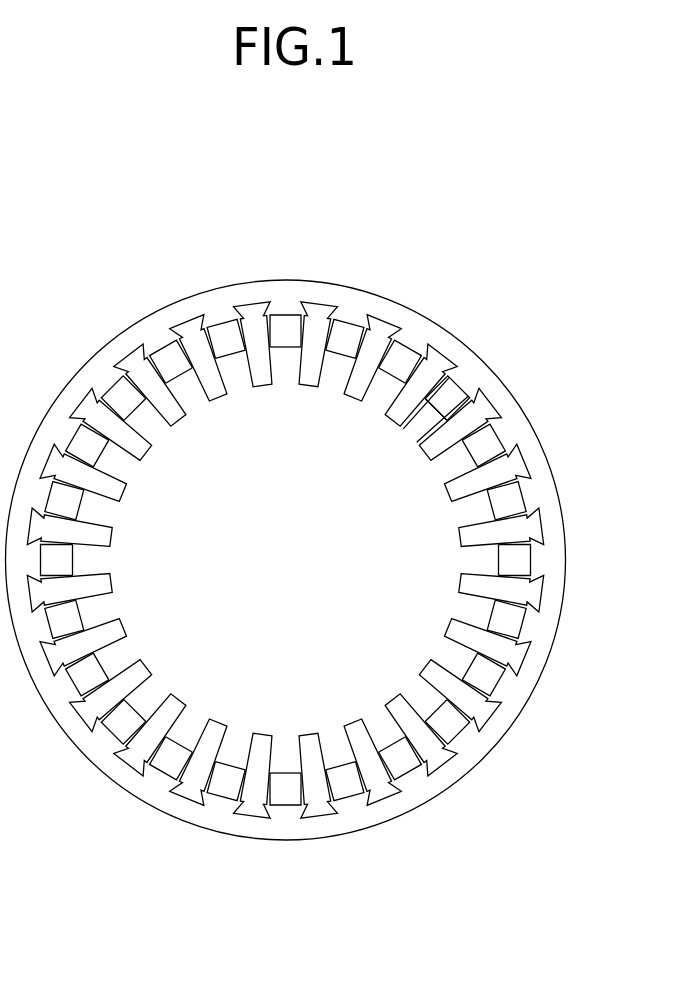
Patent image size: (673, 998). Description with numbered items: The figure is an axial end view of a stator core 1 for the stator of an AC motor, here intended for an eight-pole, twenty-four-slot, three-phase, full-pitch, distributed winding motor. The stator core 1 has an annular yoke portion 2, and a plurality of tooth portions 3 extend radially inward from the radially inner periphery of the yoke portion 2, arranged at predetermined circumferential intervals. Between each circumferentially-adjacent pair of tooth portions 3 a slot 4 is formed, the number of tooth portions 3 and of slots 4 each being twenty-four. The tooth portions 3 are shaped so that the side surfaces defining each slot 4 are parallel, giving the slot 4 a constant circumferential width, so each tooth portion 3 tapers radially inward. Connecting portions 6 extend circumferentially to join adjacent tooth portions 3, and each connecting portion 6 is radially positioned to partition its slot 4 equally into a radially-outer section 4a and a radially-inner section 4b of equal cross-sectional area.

The stator core 1 is at (425, 315).
The annular yoke portion 2 is at (125, 348).
The tooth portions 3 is at (198, 347).
The slots 4 is at (575, 318).
The radially-outer section 4a is at (448, 400).
The radially-inner section 4b is at (418, 427).
The connecting portions 6 is at (288, 347).